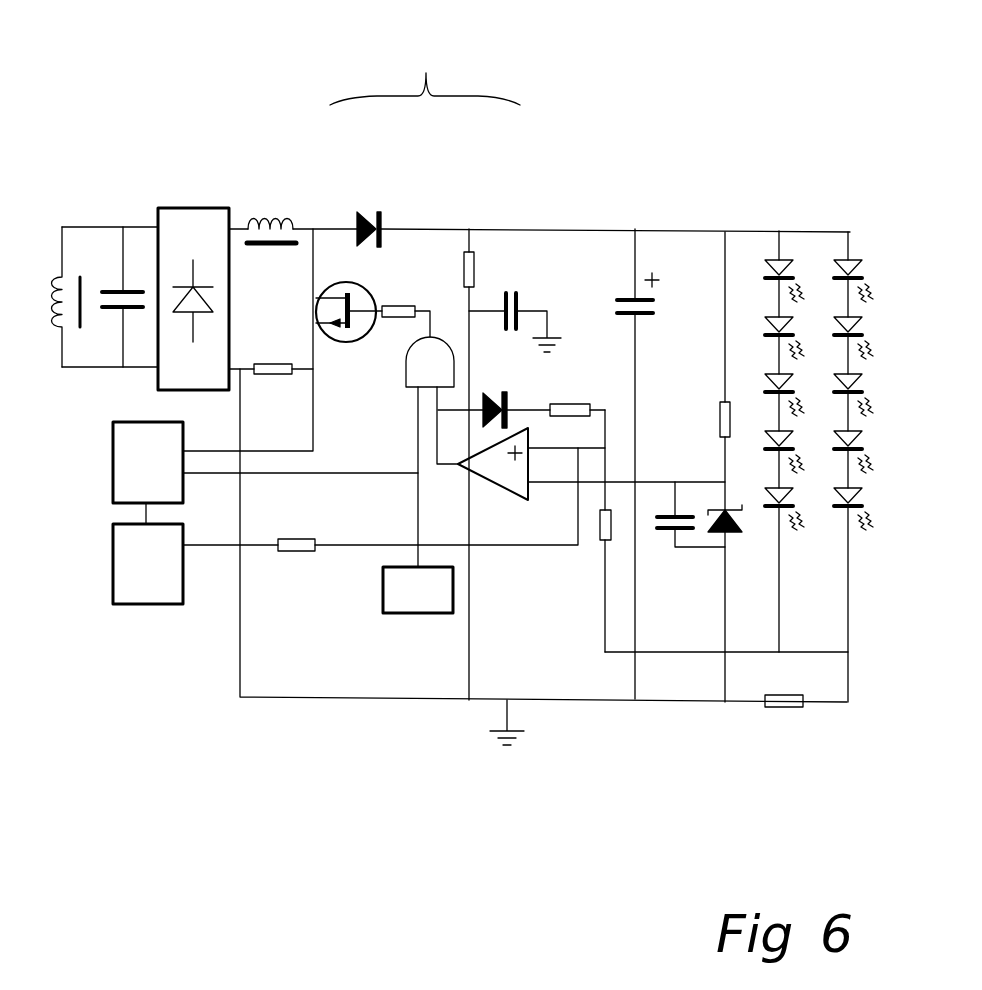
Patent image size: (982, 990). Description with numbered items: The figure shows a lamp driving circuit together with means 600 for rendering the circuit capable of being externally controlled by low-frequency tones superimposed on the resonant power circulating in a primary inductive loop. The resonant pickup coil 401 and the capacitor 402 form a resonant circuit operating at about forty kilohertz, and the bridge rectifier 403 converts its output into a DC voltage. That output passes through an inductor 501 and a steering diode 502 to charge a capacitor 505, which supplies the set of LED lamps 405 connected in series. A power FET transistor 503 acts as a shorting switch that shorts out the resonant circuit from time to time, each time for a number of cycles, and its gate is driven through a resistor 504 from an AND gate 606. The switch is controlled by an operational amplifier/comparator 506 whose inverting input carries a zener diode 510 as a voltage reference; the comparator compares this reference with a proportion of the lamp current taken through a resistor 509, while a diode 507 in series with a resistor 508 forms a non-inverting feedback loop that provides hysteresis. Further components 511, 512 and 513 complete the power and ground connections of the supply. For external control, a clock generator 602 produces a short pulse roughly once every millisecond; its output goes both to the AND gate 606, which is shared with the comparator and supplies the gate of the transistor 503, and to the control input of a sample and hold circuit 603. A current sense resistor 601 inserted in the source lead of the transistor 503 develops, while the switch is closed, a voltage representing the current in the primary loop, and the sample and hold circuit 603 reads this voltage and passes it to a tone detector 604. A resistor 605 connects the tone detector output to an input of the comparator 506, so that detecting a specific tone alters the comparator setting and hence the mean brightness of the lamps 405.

The resonant pickup coil 401 is at (43, 290).
The capacitor of the resonant circuit 402 is at (130, 292).
The bridge rectifier 403 is at (187, 207).
The set of LED lamps 405 is at (870, 268).
The inductor 501 is at (305, 197).
The steering diode 502 is at (440, 196).
The power FET transistor 503 is at (314, 322).
The gate resistor 504 is at (433, 275).
The capacitor 505 is at (615, 313).
The operational amplifier/comparator 506 is at (545, 532).
The diode 507 is at (533, 366).
The resistor 508 is at (607, 388).
The resistor 509 is at (609, 541).
The zener diode 510 is at (728, 505).
The sense resistor 511 is at (806, 704).
The return line 512 is at (670, 653).
The RC snubber 513 is at (520, 300).
The means for rendering the circuit externally controllable 600 is at (425, 64).
The current sense resistor 601 is at (286, 375).
The clock generator 602 is at (437, 613).
The sample and hold circuit 603 is at (113, 480).
The tone detector 604 is at (113, 605).
The resistor 605 is at (317, 551).
The AND gate 606 is at (412, 387).